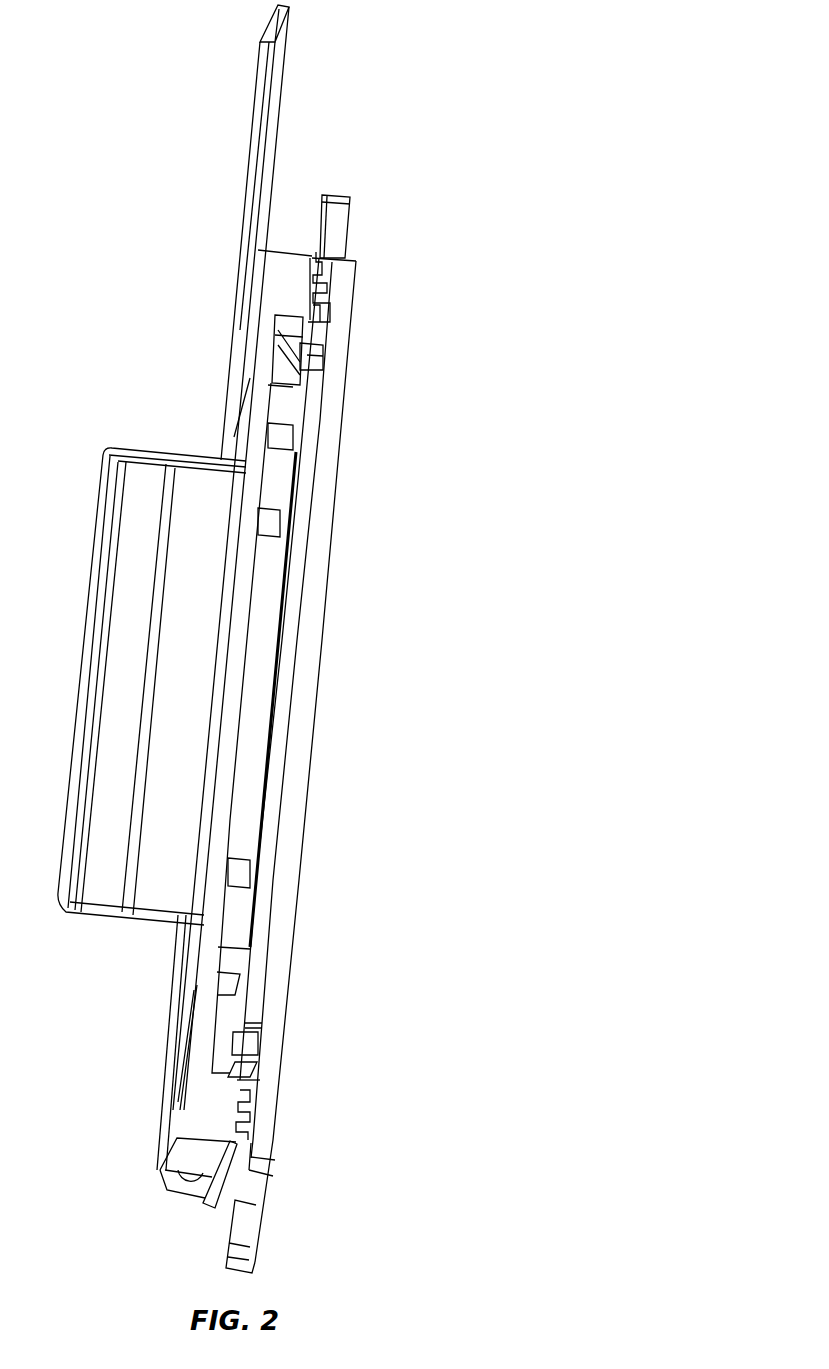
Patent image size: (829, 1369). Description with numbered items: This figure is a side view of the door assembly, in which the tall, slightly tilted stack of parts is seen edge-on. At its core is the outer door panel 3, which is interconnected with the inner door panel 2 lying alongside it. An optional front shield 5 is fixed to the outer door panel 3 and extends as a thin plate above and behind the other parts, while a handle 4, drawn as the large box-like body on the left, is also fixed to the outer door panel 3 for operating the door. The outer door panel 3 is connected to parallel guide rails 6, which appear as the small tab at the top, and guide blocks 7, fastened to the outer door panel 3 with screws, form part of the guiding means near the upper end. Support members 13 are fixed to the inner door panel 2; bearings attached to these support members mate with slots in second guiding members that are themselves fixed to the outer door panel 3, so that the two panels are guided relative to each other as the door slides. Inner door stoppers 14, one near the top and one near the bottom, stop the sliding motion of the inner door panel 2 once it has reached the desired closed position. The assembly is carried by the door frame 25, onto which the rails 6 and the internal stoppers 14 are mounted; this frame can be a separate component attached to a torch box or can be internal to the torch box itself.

The inner door panel 2 is at (298, 517).
The outer door panel 3 is at (277, 285).
The handle 4 is at (147, 477).
The front shield 5 is at (262, 90).
The guide rails 6 is at (324, 248).
The guide blocks 7 is at (326, 302).
The support members 13 is at (258, 692).
The inner door stoppers 14 is at (312, 355).
The door frame 25 is at (285, 820).